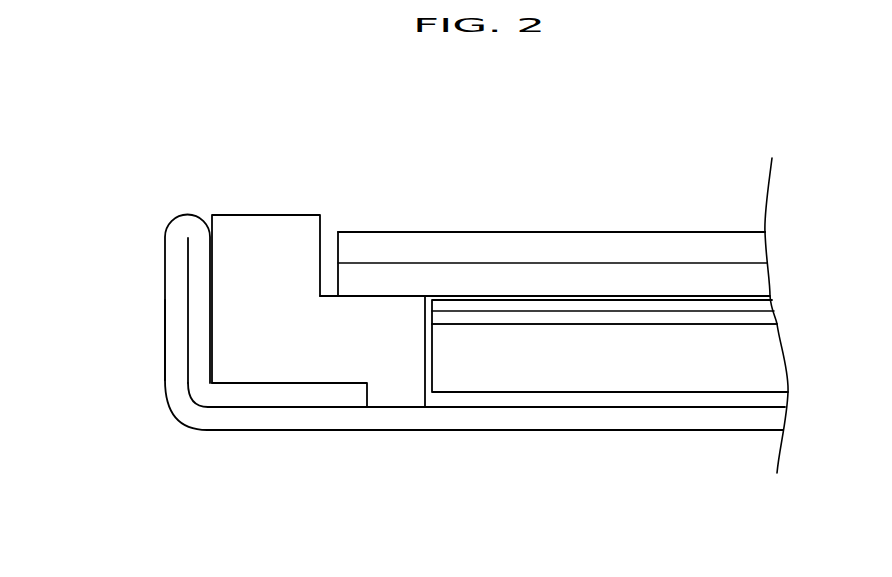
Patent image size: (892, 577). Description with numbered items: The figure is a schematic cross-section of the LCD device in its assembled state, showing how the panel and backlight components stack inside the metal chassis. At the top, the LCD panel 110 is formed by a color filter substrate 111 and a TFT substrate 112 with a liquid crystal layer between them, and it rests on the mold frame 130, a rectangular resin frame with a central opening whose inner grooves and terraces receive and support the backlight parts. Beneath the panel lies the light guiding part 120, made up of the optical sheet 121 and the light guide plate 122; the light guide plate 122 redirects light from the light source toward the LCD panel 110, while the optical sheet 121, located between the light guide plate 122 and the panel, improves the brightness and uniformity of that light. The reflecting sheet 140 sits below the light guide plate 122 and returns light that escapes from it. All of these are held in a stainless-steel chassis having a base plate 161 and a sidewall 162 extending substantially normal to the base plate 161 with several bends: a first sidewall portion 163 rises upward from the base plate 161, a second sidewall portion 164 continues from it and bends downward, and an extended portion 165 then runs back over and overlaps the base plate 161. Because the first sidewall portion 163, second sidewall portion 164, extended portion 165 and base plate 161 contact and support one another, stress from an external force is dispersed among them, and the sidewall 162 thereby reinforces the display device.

The LCD panel 110 is at (545, 189).
The color filter substrate 111 is at (482, 243).
The TFT substrate 112 is at (567, 268).
The light guiding part 120 is at (610, 422).
The optical sheet 121 is at (667, 305).
The light guide plate 122 is at (635, 378).
The mold frame 130 is at (261, 232).
The reflecting sheet 140 is at (535, 398).
The base plate 161 is at (393, 418).
The sidewall 162 is at (158, 200).
The first sidewall portion 163 is at (177, 325).
The second sidewall portion 164 is at (203, 275).
The extended portion 165 is at (253, 393).